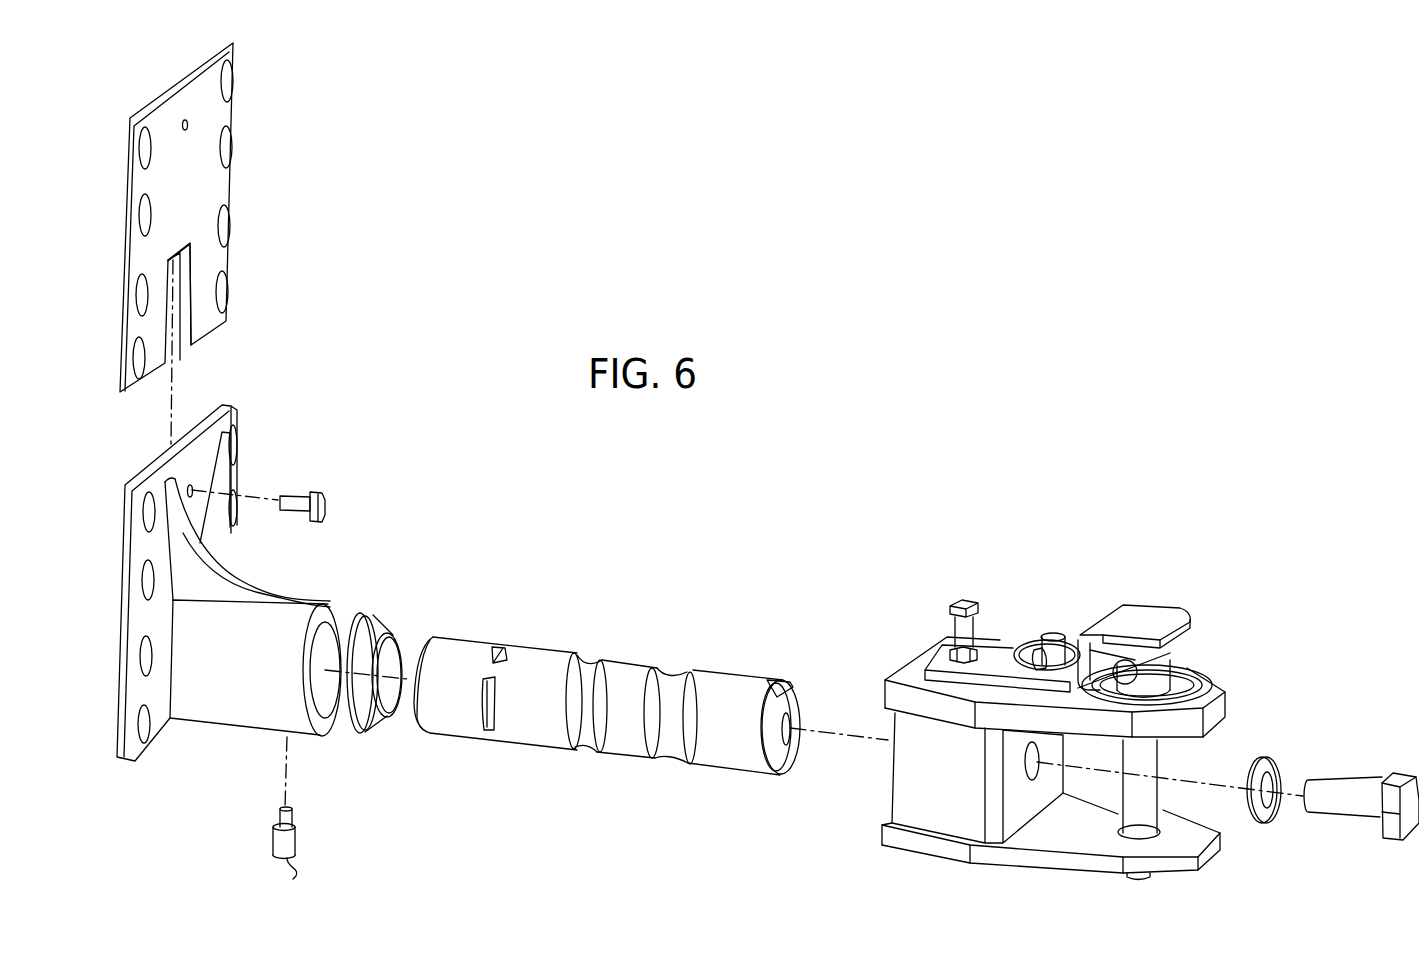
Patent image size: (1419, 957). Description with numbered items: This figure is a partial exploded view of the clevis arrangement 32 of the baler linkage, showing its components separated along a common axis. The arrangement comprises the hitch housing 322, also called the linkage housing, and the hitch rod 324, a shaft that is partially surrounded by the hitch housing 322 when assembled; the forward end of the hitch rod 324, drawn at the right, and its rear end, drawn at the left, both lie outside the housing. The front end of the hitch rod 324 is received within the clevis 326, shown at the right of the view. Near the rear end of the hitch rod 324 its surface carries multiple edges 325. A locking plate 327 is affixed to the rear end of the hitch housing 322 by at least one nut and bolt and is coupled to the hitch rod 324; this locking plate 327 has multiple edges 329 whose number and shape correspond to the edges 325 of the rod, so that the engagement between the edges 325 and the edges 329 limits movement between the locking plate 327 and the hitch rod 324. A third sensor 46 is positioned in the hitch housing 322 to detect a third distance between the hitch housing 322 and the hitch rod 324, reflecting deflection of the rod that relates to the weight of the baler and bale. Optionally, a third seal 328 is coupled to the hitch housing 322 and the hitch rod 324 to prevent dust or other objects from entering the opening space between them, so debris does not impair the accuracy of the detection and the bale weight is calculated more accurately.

The clevis arrangement 32 is at (1022, 238).
The hitch housing 322 is at (247, 737).
The hitch rod 324 is at (523, 753).
The edges 325 is at (502, 647).
The clevis 326 is at (1137, 530).
The locking plate 327 is at (209, 198).
The third seal 328 is at (387, 628).
The edges 329 is at (186, 304).
The third sensor 46 is at (295, 838).